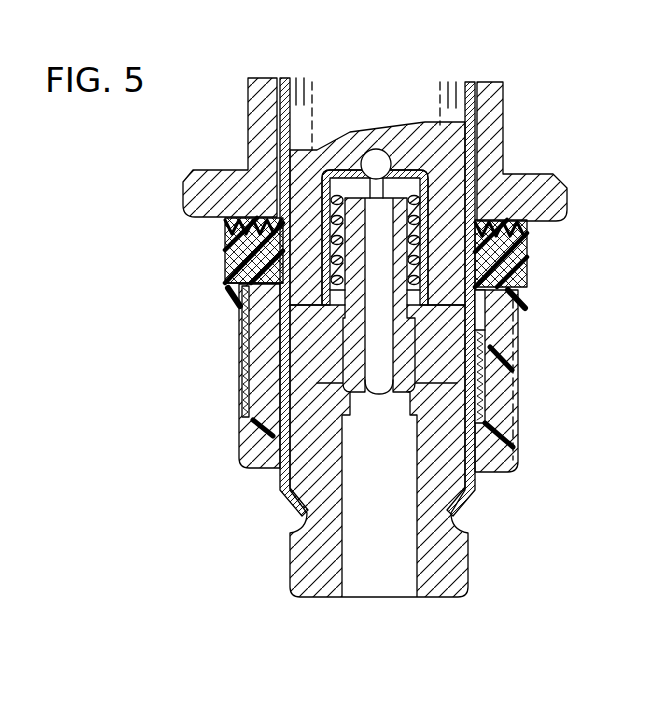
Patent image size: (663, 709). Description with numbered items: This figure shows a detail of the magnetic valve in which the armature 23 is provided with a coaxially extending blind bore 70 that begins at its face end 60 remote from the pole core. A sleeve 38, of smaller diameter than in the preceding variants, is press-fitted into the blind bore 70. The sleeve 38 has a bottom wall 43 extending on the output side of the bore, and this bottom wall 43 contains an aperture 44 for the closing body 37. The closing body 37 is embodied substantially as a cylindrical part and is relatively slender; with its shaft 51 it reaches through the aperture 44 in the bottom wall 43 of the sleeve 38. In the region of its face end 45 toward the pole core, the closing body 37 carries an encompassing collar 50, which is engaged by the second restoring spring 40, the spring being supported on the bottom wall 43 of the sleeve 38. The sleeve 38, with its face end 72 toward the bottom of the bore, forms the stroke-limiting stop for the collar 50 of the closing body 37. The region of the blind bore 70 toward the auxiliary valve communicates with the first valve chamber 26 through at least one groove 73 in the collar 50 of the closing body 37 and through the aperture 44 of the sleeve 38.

The armature 23 is at (335, 107).
The first valve chamber 26 is at (318, 362).
The closing body 37 is at (330, 265).
The sleeve 38 is at (527, 253).
The second restoring spring 40 is at (330, 247).
The bottom wall 43 is at (295, 300).
The aperture 44 is at (345, 313).
The face end 45 is at (425, 150).
The collar 50 is at (430, 194).
The shaft 51 is at (330, 287).
The face end 60 is at (473, 324).
The blind bore 70 is at (422, 175).
The face end 72 is at (330, 197).
The groove 73 is at (322, 188).